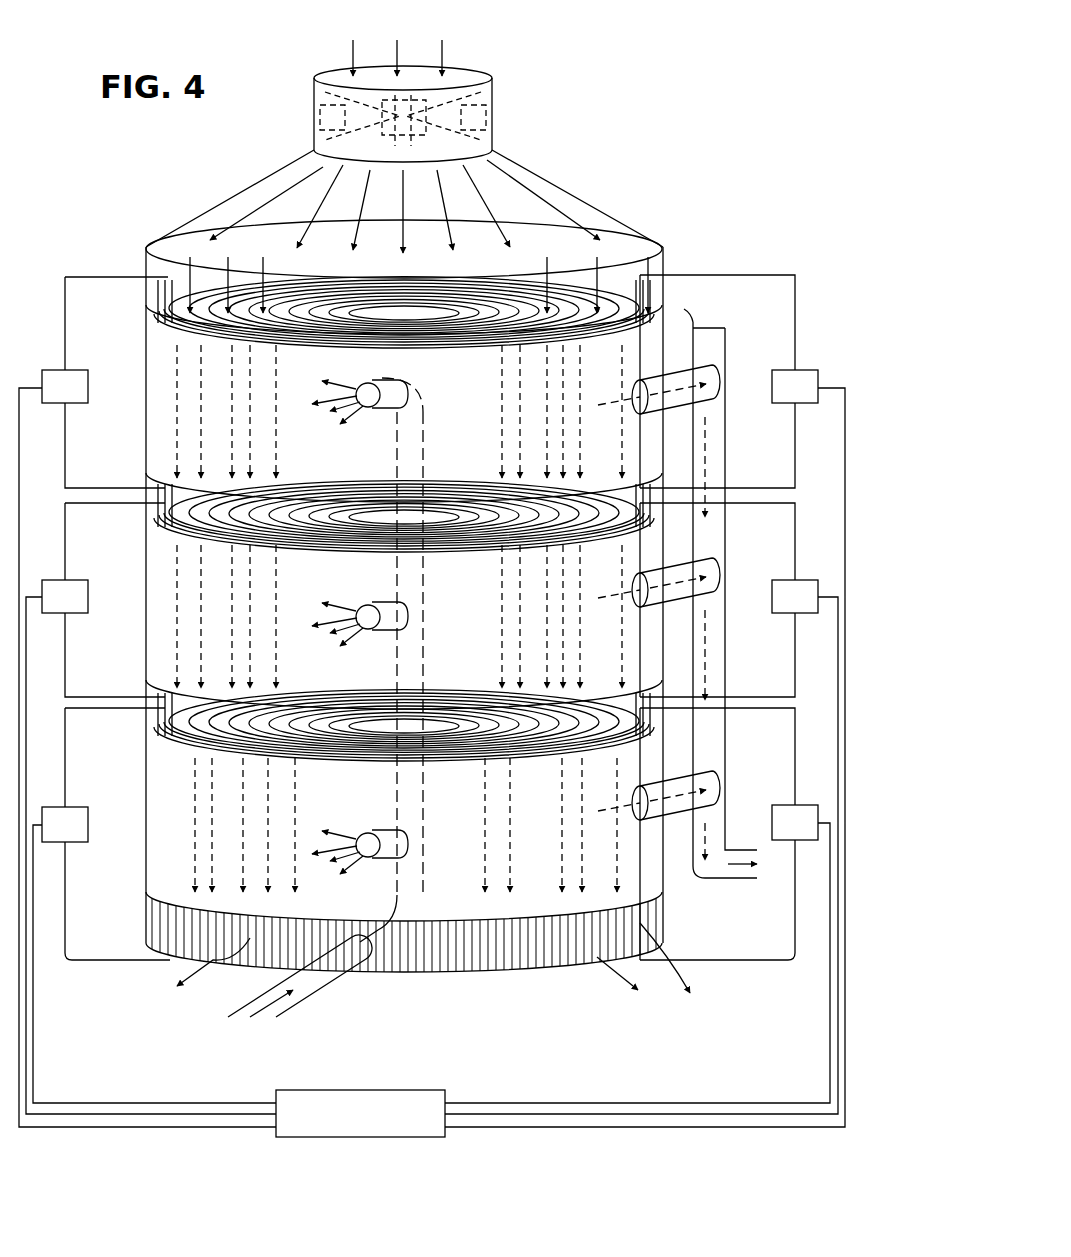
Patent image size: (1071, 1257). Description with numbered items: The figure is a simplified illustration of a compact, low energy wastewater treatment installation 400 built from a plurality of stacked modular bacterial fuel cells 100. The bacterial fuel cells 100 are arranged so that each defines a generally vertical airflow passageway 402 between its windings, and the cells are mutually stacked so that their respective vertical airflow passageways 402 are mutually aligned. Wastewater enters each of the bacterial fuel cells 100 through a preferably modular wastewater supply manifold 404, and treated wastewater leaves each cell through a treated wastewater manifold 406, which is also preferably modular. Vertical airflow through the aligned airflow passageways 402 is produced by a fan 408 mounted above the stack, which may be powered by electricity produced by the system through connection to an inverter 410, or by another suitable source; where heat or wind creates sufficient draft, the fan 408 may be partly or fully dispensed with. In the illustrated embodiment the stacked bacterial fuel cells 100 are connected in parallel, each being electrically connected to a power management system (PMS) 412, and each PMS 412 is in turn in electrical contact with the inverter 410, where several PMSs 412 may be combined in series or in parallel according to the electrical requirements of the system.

The bacterial fuel cell 100 is at (140, 403).
The wastewater treatment installation 400 is at (237, 183).
The vertical airflow passageway 402 is at (222, 428).
The wastewater supply manifold 404 is at (411, 448).
The treated wastewater manifold 406 is at (720, 355).
The fan 408 is at (345, 95).
The inverter 410 is at (403, 1090).
The power management system (PMS) 412 is at (70, 403).